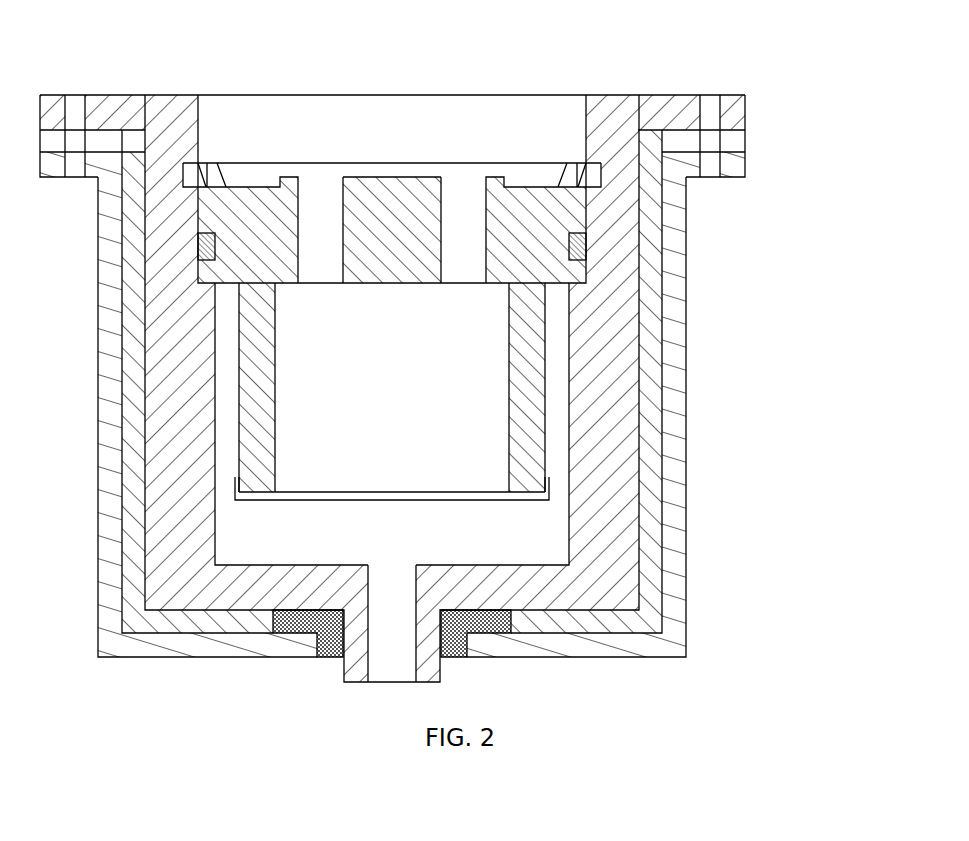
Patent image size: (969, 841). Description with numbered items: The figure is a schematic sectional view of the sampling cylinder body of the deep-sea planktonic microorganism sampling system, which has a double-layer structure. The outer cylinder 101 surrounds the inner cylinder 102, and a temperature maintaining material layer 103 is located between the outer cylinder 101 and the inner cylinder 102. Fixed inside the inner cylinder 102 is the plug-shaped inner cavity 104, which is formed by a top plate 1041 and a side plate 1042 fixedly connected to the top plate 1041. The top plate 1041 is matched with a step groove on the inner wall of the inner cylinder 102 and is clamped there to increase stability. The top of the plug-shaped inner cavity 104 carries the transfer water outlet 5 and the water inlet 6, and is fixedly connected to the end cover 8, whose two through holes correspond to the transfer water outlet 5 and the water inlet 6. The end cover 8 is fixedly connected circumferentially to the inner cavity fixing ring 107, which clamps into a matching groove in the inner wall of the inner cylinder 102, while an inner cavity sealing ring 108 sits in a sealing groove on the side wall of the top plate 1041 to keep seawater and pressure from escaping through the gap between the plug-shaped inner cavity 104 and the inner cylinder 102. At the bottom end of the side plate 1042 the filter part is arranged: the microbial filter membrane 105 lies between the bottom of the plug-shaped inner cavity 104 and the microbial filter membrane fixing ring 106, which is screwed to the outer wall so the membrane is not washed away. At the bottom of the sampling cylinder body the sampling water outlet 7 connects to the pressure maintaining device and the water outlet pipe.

The transfer water outlet 5 is at (325, 195).
The water inlet 6 is at (468, 200).
The sampling water outlet 7 is at (582, 633).
The end cover 8 is at (400, 180).
The outer cylinder 101 is at (590, 230).
The inner cylinder 102 is at (607, 345).
The temperature maintaining material layer 103 is at (650, 403).
The plug-shaped inner cavity 104 is at (475, 404).
The top plate 1041 is at (230, 262).
The side plate 1042 is at (238, 442).
The microbial filter membrane 105 is at (463, 495).
The microbial filter membrane fixing ring 106 is at (550, 477).
The inner cavity fixing ring 107 is at (597, 165).
The inner cavity sealing ring 108 is at (586, 247).